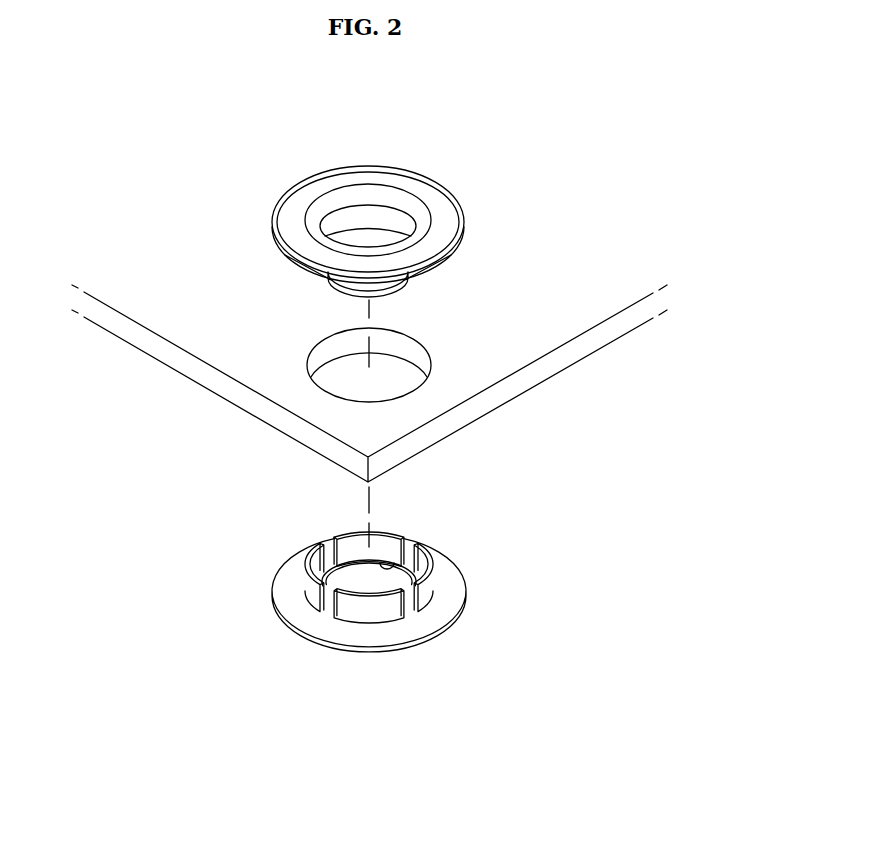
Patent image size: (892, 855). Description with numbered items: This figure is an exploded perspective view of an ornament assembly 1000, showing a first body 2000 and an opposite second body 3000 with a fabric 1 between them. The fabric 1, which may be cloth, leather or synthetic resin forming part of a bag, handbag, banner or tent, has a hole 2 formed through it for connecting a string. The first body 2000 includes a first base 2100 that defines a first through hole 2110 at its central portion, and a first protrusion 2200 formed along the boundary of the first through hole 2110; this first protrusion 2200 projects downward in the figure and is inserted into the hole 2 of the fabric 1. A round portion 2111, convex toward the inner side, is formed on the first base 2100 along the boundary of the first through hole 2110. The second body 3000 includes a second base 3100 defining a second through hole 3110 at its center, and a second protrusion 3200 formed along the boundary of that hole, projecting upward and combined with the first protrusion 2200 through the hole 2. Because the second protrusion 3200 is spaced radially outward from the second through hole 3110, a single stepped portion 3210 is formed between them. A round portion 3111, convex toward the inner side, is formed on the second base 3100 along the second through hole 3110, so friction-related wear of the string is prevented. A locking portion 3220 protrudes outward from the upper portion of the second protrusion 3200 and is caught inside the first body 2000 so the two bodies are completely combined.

The ornament assembly 1000 is at (136, 98).
The first body 2000 is at (430, 160).
The first base 2100 is at (440, 191).
The first through hole 2110 is at (362, 242).
The round portion 2111 is at (424, 216).
The first protrusion 2200 is at (338, 290).
The fabric 1 is at (498, 347).
The hole 2 is at (361, 376).
The second body 3000 is at (468, 620).
The second base 3100 is at (289, 626).
The second through hole 3110 is at (357, 582).
The round portion 3111 is at (388, 565).
The second protrusion 3200 is at (433, 587).
The stepped portion 3210 is at (434, 557).
The locking portion 3220 is at (312, 546).